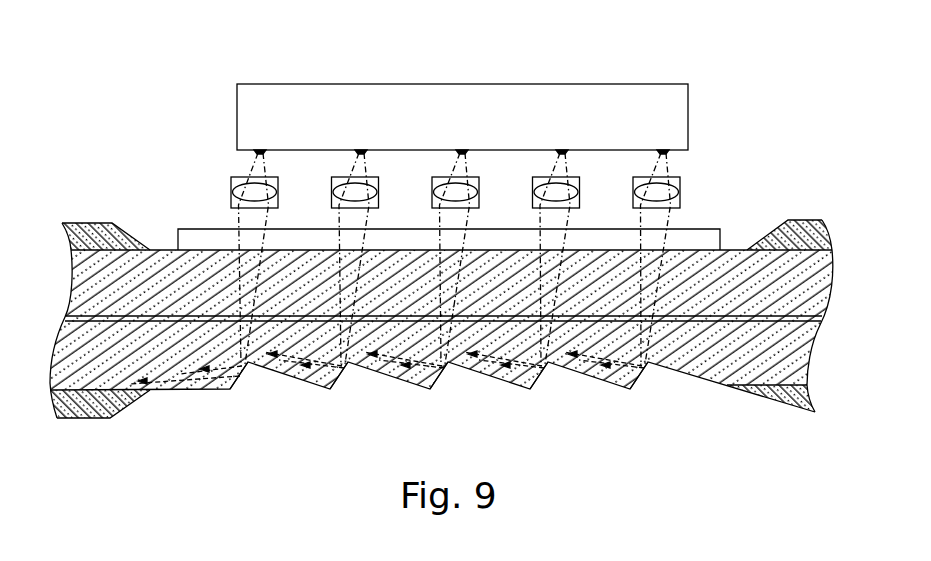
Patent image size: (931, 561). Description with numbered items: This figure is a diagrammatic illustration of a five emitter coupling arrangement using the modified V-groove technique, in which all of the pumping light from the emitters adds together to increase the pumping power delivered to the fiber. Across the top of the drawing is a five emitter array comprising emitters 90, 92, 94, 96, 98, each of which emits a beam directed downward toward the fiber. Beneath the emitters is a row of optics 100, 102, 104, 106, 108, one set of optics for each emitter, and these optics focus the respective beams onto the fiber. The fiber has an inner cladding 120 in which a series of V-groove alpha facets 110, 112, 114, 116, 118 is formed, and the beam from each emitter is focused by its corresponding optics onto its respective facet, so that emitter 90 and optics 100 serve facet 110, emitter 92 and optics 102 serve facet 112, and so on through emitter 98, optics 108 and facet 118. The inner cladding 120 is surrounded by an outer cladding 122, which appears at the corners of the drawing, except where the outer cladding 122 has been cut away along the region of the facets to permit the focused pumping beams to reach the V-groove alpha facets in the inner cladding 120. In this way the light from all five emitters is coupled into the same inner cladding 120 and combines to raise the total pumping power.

The emitter 90 is at (268, 151).
The emitter 92 is at (369, 151).
The emitter 94 is at (470, 151).
The emitter 96 is at (570, 151).
The emitter 98 is at (670, 152).
The optics 100 is at (274, 177).
The optics 102 is at (375, 177).
The optics 104 is at (475, 177).
The optics 106 is at (576, 177).
The optics 108 is at (681, 177).
The V-groove alpha facet 110 is at (232, 391).
The V-groove alpha facet 112 is at (343, 390).
The V-groove alpha facet 114 is at (443, 390).
The V-groove alpha facet 116 is at (543, 390).
The V-groove alpha facet 118 is at (643, 390).
The inner cladding 120 is at (766, 362).
The outer cladding 122 is at (93, 223).